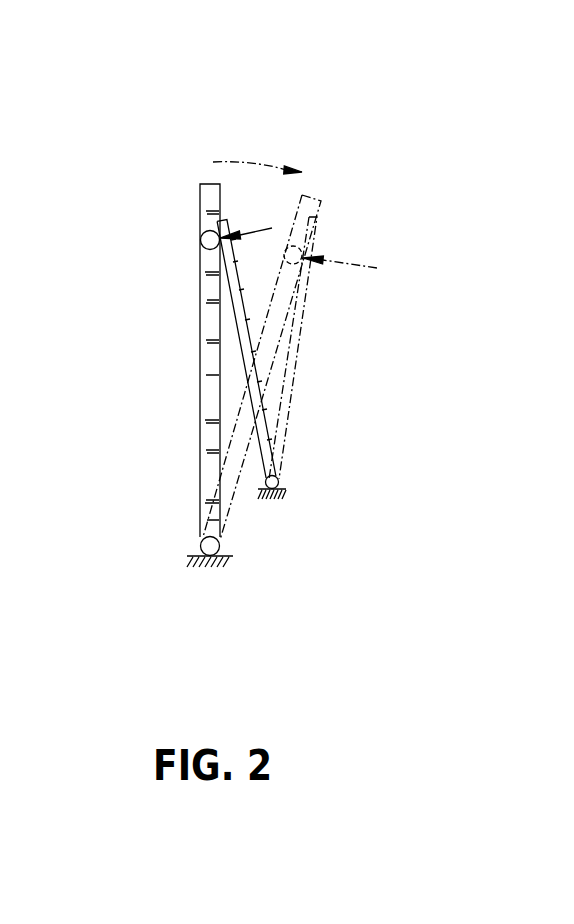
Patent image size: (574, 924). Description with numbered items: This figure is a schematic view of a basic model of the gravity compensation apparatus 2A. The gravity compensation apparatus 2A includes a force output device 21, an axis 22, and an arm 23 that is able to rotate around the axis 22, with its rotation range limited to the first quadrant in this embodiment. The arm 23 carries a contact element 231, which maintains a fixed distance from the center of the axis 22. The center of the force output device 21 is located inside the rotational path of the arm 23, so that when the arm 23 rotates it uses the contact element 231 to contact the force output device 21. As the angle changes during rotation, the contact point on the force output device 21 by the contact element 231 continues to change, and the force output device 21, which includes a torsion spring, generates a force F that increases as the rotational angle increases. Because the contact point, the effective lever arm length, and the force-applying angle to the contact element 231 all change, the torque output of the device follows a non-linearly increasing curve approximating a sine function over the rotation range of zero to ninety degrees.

The gravity compensation apparatus 2A is at (257, 328).
The arm 23 is at (212, 205).
The contact element 231 is at (203, 239).
The force output device 21 is at (240, 317).
The axis 22 is at (213, 545).